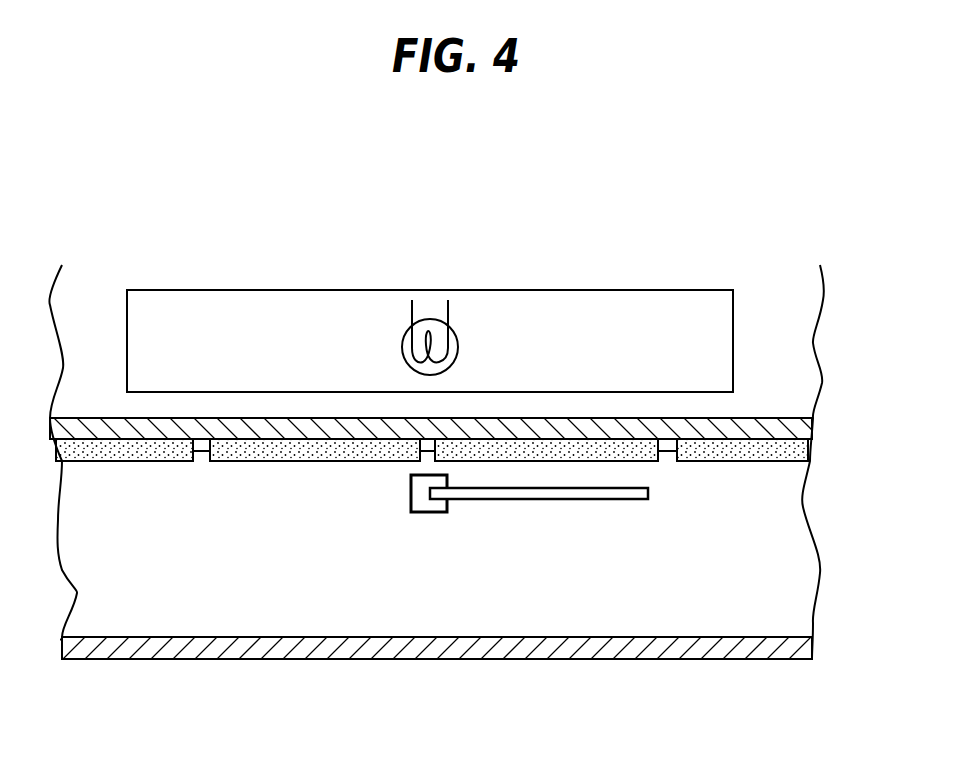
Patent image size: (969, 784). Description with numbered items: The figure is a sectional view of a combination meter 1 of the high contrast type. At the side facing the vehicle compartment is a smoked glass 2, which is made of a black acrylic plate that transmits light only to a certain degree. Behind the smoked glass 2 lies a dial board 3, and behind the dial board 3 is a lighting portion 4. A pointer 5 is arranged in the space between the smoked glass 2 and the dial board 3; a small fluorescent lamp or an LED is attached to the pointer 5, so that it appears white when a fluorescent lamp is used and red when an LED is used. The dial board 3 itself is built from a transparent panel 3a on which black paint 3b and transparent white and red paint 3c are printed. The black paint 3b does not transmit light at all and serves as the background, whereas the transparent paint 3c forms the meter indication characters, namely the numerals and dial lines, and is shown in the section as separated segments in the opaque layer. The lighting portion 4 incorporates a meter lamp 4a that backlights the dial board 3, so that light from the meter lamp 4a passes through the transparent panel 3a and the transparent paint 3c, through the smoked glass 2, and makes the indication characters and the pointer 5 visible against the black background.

The combination meter 1 is at (838, 522).
The smoked glass 2 is at (572, 659).
The dial board 3 is at (478, 428).
The transparent panel 3a is at (644, 427).
The black paint 3b is at (750, 461).
The transparent paint 3c is at (200, 461).
The lighting portion 4 is at (430, 271).
The meter lamp 4a is at (457, 337).
The pointer 5 is at (527, 499).